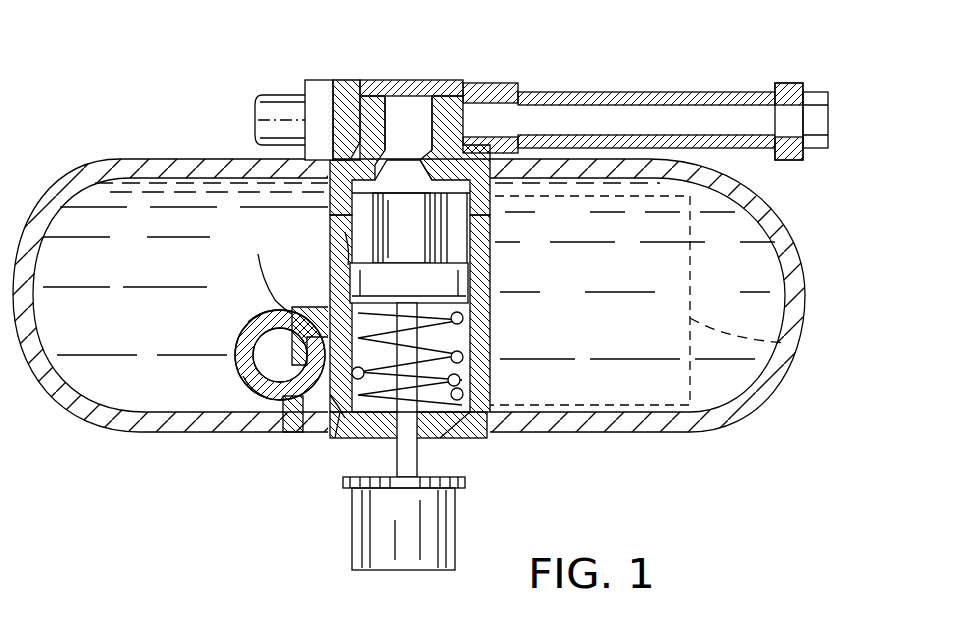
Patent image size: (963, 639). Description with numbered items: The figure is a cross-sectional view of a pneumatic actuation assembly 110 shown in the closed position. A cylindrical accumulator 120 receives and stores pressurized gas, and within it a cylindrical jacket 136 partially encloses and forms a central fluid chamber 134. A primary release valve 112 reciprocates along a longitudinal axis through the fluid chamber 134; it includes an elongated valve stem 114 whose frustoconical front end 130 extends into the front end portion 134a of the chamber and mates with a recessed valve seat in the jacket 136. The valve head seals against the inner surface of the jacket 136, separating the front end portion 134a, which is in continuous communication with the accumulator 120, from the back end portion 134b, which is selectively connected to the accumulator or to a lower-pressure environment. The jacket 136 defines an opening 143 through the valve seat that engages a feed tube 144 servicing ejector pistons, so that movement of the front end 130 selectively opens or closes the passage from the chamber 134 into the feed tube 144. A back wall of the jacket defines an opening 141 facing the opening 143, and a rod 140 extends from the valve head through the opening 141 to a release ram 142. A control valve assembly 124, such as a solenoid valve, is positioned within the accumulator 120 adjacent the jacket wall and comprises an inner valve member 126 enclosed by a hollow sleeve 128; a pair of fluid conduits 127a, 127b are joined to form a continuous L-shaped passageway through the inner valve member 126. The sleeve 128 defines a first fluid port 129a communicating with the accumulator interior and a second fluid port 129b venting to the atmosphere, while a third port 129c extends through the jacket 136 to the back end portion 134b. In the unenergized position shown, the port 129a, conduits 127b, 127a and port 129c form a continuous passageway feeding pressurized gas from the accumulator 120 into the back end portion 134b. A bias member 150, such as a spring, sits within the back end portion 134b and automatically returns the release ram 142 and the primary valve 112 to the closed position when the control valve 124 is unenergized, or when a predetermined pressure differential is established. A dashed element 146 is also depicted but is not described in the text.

The actuation assembly 110 is at (217, 108).
The primary release valve 112 is at (488, 235).
The valve stem 114 is at (406, 148).
The accumulator 120 is at (118, 222).
The control valve assembly 124 is at (215, 355).
The inner valve member 126 is at (285, 433).
The fluid conduit 127a is at (243, 376).
The fluid conduit 127b is at (245, 338).
The hollow sleeve 128 is at (260, 318).
The first fluid port 129a is at (363, 241).
The second fluid port 129b is at (290, 425).
The third port 129c is at (348, 300).
The frustoconical front end 130 is at (352, 105).
The central fluid chamber 134 is at (488, 225).
The front end portion 134a is at (463, 224).
The back end portion 134b is at (460, 415).
The cylindrical jacket 136 is at (490, 376).
The rod 140 is at (417, 462).
The opening 141 is at (363, 437).
The release ram 142 is at (388, 548).
The opening 143 is at (422, 150).
The feed tube 144 is at (628, 107).
The suction line 146 is at (790, 343).
The bias member 150 is at (335, 438).